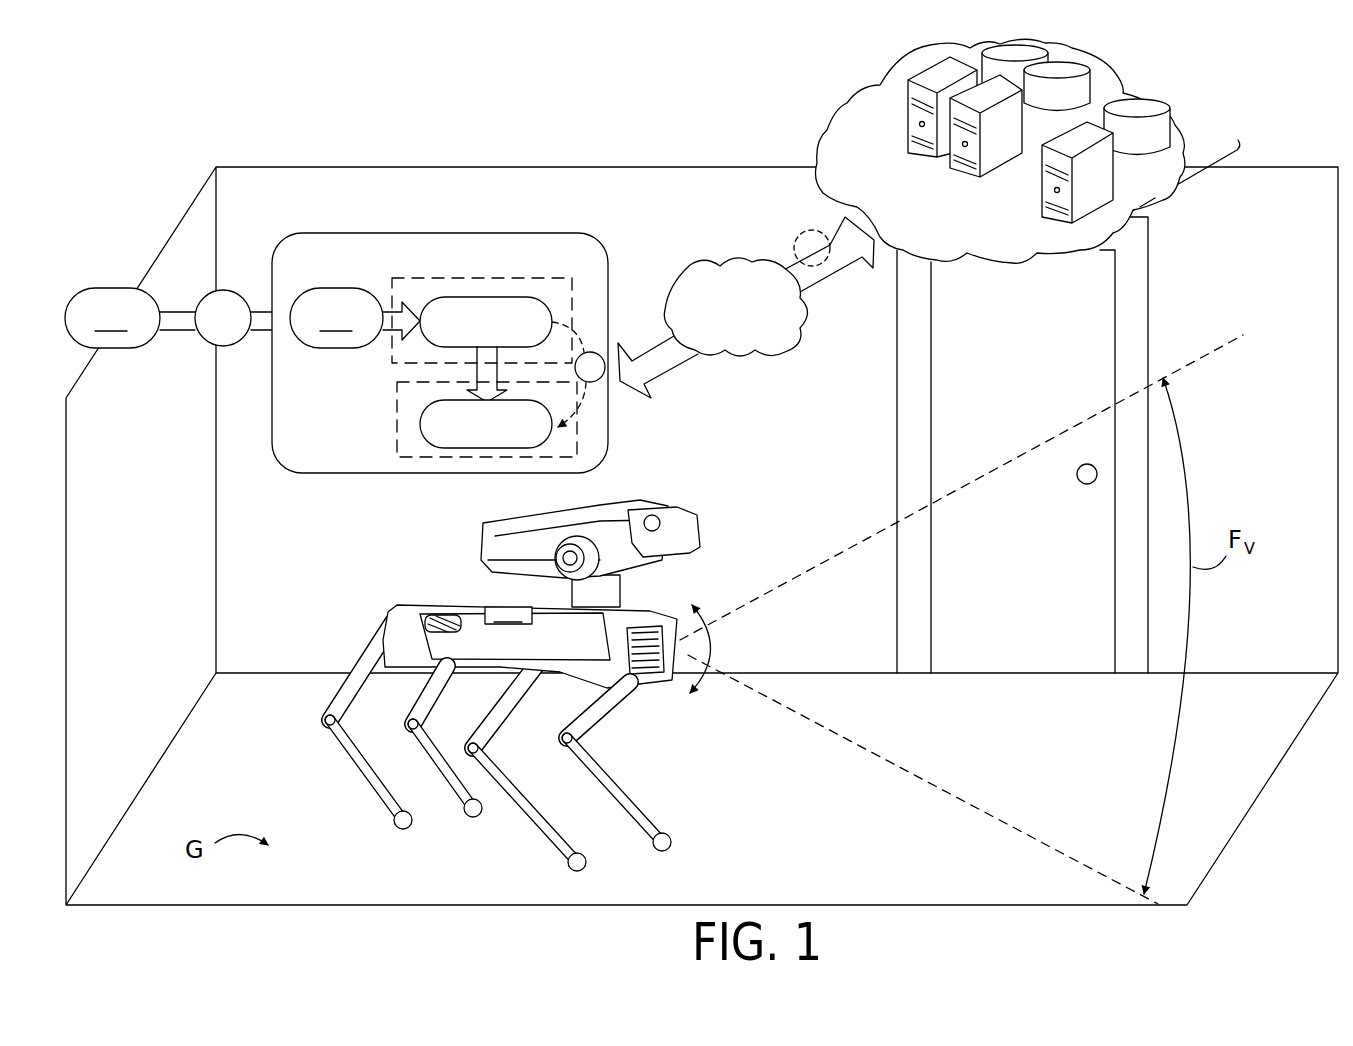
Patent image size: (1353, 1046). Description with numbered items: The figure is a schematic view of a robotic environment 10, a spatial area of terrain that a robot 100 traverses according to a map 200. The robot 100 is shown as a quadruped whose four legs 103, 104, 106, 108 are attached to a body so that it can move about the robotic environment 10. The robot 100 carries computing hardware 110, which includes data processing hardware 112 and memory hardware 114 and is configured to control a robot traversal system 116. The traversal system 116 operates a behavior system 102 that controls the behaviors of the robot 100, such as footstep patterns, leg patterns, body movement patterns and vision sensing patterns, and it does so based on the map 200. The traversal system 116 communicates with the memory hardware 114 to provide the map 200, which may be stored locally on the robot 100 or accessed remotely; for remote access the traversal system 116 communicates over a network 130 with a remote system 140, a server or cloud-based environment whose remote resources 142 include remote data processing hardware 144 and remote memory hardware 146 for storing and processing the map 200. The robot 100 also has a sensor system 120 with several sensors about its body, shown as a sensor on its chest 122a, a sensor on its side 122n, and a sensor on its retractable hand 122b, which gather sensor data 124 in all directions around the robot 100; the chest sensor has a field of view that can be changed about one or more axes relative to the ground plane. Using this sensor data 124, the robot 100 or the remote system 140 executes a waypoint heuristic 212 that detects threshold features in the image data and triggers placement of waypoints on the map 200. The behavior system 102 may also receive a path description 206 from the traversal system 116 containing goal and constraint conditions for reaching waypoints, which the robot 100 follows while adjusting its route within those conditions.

The robotic environment 10 is at (608, 100).
The robot 100 is at (516, 656).
The behavior system 102 is at (487, 448).
The leg 103 is at (567, 822).
The leg 104 is at (653, 800).
The leg 106 is at (433, 730).
The leg 108 is at (346, 747).
The computing hardware 110 is at (428, 478).
The data processing hardware 112 is at (396, 437).
The memory hardware 114 is at (392, 350).
The robot traversal system 116 is at (540, 267).
The sensor system 120 is at (629, 460).
The chest sensor 122a is at (656, 624).
The retractable hand sensor 122b is at (685, 475).
The side sensor 122n is at (420, 622).
The sensor data 124 is at (203, 292).
The network 130 is at (703, 258).
The remote system 140 is at (853, 100).
The remote resources 142 is at (1140, 207).
The remote data processing hardware 144 is at (1112, 172).
The remote memory hardware 146 is at (1170, 137).
The map 200 is at (527, 332).
The path description 206 is at (599, 352).
The waypoint heuristic 212 is at (355, 318).